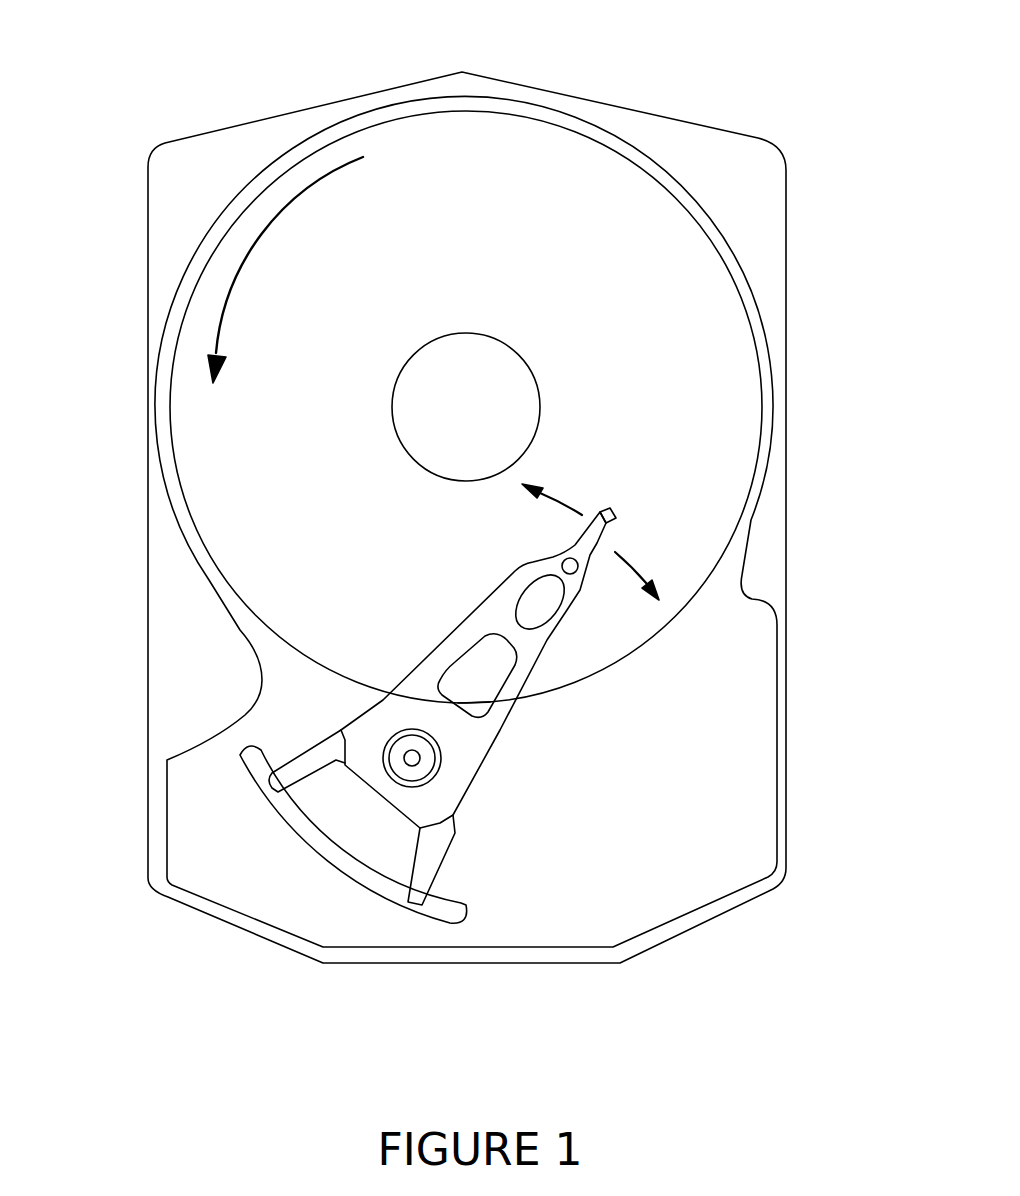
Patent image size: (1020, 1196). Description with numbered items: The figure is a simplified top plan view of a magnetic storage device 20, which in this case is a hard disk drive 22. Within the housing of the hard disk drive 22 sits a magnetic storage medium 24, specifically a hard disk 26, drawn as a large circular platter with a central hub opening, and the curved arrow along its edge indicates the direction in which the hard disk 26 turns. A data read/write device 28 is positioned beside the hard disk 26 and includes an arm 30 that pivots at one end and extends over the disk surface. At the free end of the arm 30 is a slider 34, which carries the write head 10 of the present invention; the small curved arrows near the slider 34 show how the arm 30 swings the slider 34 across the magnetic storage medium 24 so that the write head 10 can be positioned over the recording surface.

The write head 10 is at (303, 72).
The magnetic storage device 20 is at (228, 113).
The hard disk drive 22 is at (127, 290).
The magnetic storage medium 24 is at (688, 293).
The hard disk 26 is at (680, 380).
The data read/write device 28 is at (633, 494).
The arm 30 is at (588, 542).
The slider 34 is at (615, 518).